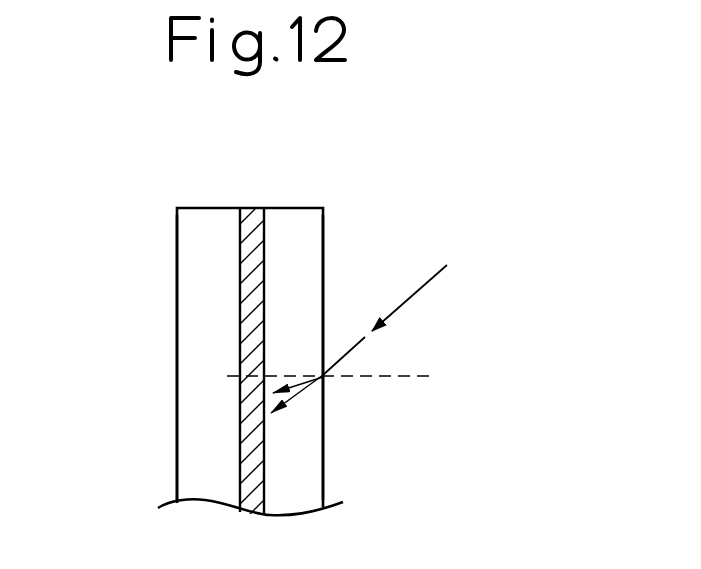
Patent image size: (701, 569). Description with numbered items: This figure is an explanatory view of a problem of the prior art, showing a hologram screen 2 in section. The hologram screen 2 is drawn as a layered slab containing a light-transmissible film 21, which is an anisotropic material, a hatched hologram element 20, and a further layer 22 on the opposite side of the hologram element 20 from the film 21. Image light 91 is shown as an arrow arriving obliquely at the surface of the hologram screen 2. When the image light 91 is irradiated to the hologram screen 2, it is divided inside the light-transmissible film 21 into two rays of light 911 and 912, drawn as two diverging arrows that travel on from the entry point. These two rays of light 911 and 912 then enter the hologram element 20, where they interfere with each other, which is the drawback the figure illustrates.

The hologram screen 2 is at (263, 336).
The hologram element 20 is at (242, 247).
The light-transmissible film 21 is at (293, 250).
The second layer 22 is at (205, 337).
The image light 91 is at (428, 283).
The ray of light 911 is at (296, 398).
The ray of light 912 is at (292, 384).